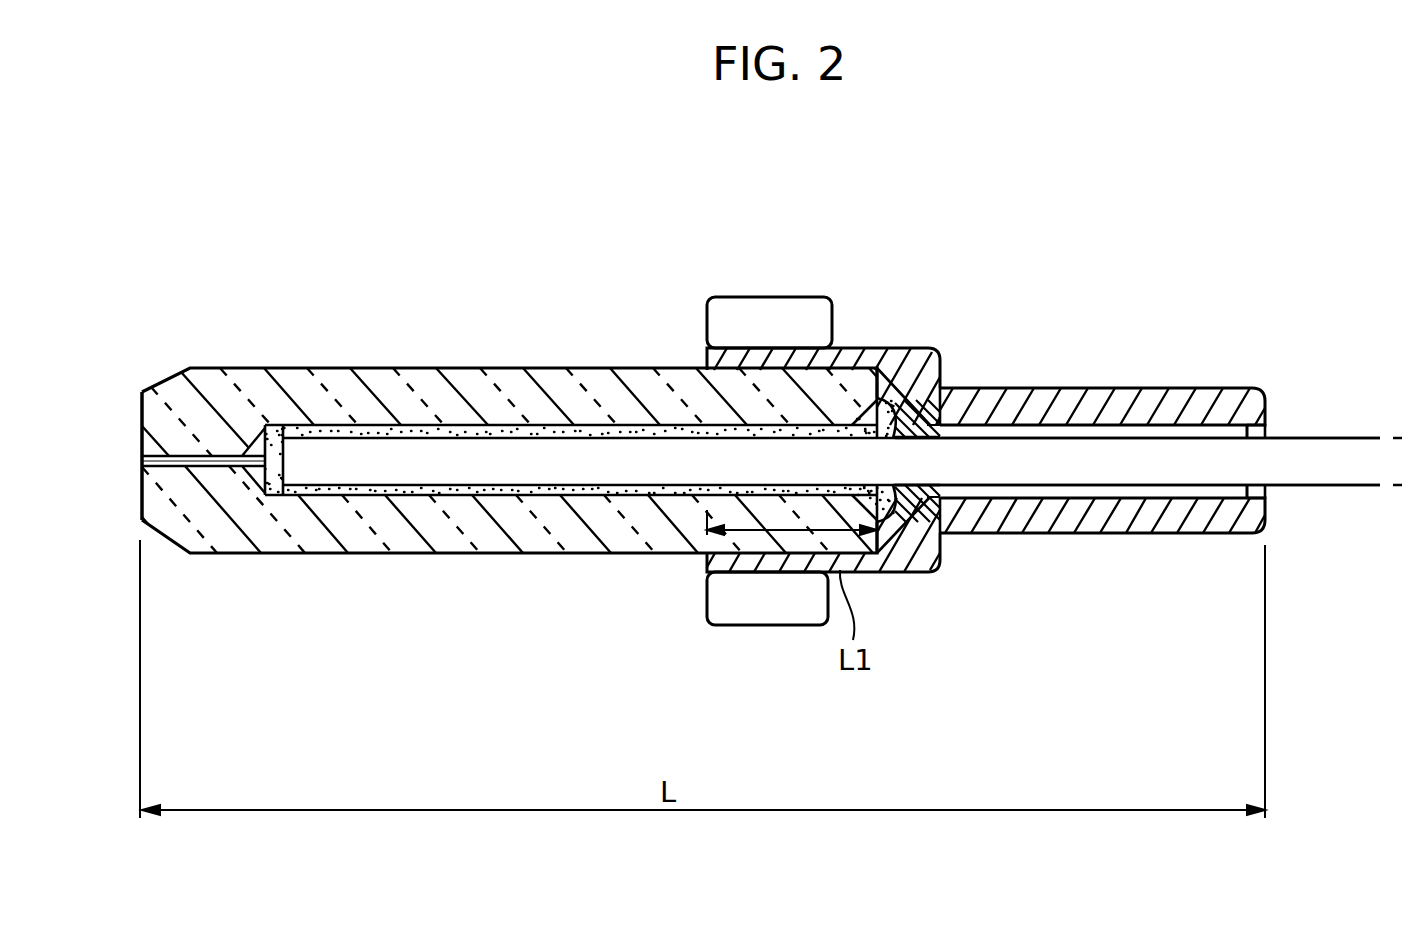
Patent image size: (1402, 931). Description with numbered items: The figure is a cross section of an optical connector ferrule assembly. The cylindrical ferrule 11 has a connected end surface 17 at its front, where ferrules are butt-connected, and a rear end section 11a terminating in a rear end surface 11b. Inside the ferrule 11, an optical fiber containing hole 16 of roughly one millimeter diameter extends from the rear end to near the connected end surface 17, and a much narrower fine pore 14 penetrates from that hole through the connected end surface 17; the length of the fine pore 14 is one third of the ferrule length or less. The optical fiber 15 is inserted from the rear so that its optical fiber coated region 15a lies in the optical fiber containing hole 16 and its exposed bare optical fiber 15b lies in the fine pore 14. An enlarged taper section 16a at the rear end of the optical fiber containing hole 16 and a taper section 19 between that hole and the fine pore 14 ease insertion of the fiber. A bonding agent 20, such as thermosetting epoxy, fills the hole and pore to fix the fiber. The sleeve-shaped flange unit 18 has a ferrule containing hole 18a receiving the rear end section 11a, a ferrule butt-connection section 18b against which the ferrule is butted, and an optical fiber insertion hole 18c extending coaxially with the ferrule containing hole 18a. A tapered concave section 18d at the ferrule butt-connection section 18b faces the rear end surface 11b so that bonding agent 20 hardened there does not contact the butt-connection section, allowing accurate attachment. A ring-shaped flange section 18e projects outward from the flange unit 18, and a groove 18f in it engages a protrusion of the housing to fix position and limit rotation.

The ferrule 11 is at (470, 368).
The rear end section of the ferrule 11a is at (903, 573).
The rear end surface of the ferrule 11b is at (905, 413).
The fine pore 14 is at (142, 480).
The optical fiber 15 is at (1305, 438).
The optical fiber coated region 15a is at (1137, 461).
The bare optical fiber 15b is at (142, 458).
The optical fiber containing hole 16 is at (943, 543).
The taper section 16a is at (942, 388).
The connected end surface 17 is at (140, 512).
The flange unit 18 is at (1048, 388).
The ferrule containing hole 18a is at (847, 372).
The ferrule butt-connection section 18b is at (923, 577).
The optical fiber insertion hole 18c is at (1262, 490).
The concave section 18d is at (920, 387).
The flange section 18e is at (770, 623).
The groove 18f is at (779, 310).
The taper section 19 is at (280, 490).
The bonding agent 20 is at (930, 570).